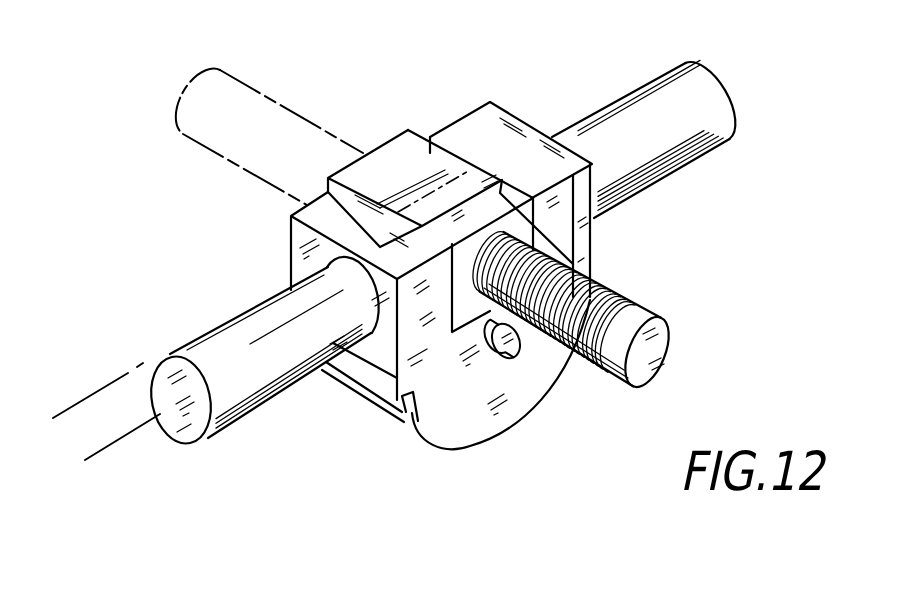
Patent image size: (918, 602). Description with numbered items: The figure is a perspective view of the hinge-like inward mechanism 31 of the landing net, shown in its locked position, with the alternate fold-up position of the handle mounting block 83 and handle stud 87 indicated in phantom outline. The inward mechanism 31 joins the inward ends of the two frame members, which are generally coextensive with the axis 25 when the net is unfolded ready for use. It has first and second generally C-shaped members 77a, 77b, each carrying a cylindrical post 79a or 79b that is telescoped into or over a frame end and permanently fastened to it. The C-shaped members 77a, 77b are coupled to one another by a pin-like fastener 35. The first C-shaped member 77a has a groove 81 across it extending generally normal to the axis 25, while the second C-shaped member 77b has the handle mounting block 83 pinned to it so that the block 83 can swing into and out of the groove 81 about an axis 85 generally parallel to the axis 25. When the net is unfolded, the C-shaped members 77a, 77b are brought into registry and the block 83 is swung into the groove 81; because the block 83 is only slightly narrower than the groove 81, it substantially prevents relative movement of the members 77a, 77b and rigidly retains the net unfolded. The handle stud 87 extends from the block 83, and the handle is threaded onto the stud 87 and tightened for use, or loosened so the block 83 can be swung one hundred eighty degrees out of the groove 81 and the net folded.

The axis 25 is at (110, 445).
The inward mechanism 31 is at (376, 440).
The pin-like fastener 35 is at (507, 344).
The first C-shaped member 77a is at (407, 420).
The second C-shaped member 77b is at (492, 133).
The cylindrical post 79a is at (265, 312).
The cylindrical post 79b is at (715, 106).
The groove 81 is at (467, 332).
The handle mounting block 83 is at (500, 205).
The axis 85 is at (85, 397).
The handle stud 87 is at (653, 352).